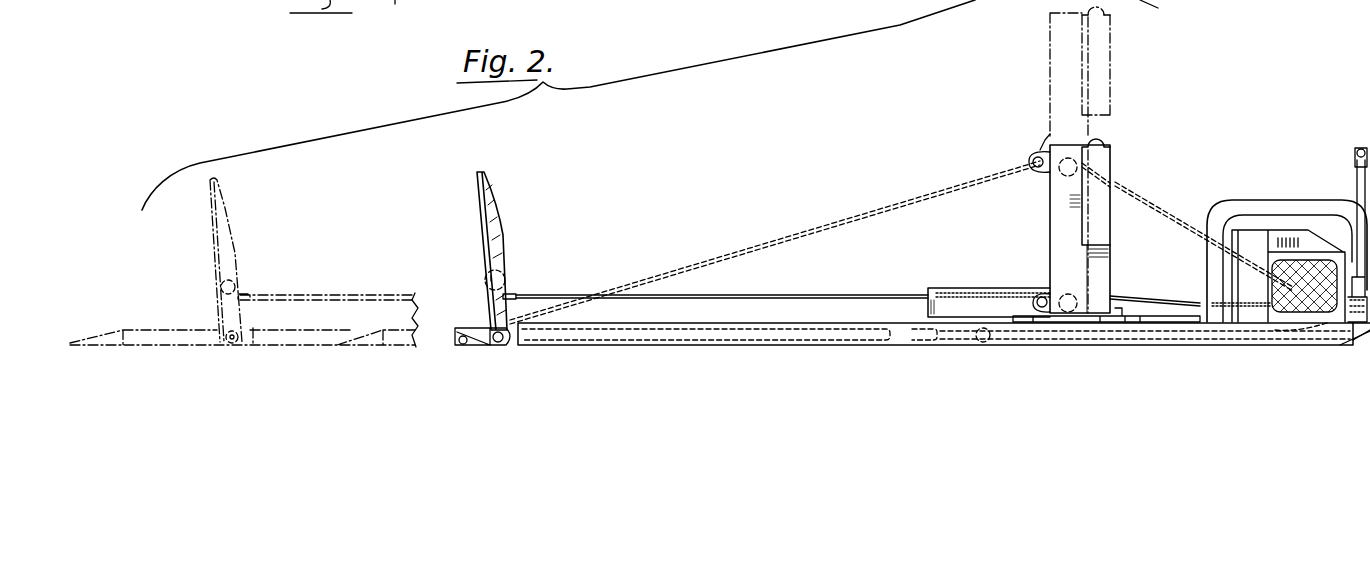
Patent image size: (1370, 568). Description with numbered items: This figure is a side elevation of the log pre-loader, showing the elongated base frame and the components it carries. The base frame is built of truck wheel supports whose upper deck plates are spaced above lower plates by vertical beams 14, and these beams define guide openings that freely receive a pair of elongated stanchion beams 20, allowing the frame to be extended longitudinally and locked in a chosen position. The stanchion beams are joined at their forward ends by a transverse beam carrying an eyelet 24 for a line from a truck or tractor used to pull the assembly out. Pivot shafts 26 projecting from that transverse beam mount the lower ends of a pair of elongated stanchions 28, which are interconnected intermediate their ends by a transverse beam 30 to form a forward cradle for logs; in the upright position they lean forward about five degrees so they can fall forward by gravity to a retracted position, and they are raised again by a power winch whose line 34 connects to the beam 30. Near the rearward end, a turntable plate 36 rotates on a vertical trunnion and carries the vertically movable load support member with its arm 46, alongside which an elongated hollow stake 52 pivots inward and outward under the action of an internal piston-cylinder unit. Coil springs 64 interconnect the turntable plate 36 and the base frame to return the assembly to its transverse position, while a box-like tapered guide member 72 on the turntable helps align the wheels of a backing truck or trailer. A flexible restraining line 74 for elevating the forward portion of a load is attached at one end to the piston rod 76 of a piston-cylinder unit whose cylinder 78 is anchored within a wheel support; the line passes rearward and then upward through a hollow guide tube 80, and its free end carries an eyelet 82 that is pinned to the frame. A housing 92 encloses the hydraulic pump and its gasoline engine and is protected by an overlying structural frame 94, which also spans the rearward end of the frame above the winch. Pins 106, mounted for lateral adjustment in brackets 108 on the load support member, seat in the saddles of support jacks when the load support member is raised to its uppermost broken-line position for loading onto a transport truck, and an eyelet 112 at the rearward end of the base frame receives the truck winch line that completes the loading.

The vertical beams 14 is at (643, 338).
The stanchion beams 20 is at (512, 342).
The eyelet 24 is at (465, 340).
The pivot shafts 26 is at (486, 340).
The stanchions 28 is at (213, 270).
The transverse beam 30 is at (232, 284).
The line 34 is at (330, 295).
The turntable plate 36 is at (1085, 322).
The arm 46 is at (1050, 48).
The stakes 52 is at (1108, 155).
The coil springs 64 is at (1150, 303).
The guide member 72 is at (950, 288).
The restraining line 74 is at (1360, 188).
The piston rod 76 is at (962, 340).
The cylinder 78 is at (918, 342).
The guide tube 80 is at (1330, 333).
The eyelet 82 is at (1357, 152).
The housing 92 is at (1285, 230).
The structural frame 94 is at (1248, 203).
The pins 106 is at (1035, 162).
The brackets 108 is at (1037, 143).
The eyelet 112 is at (1368, 343).